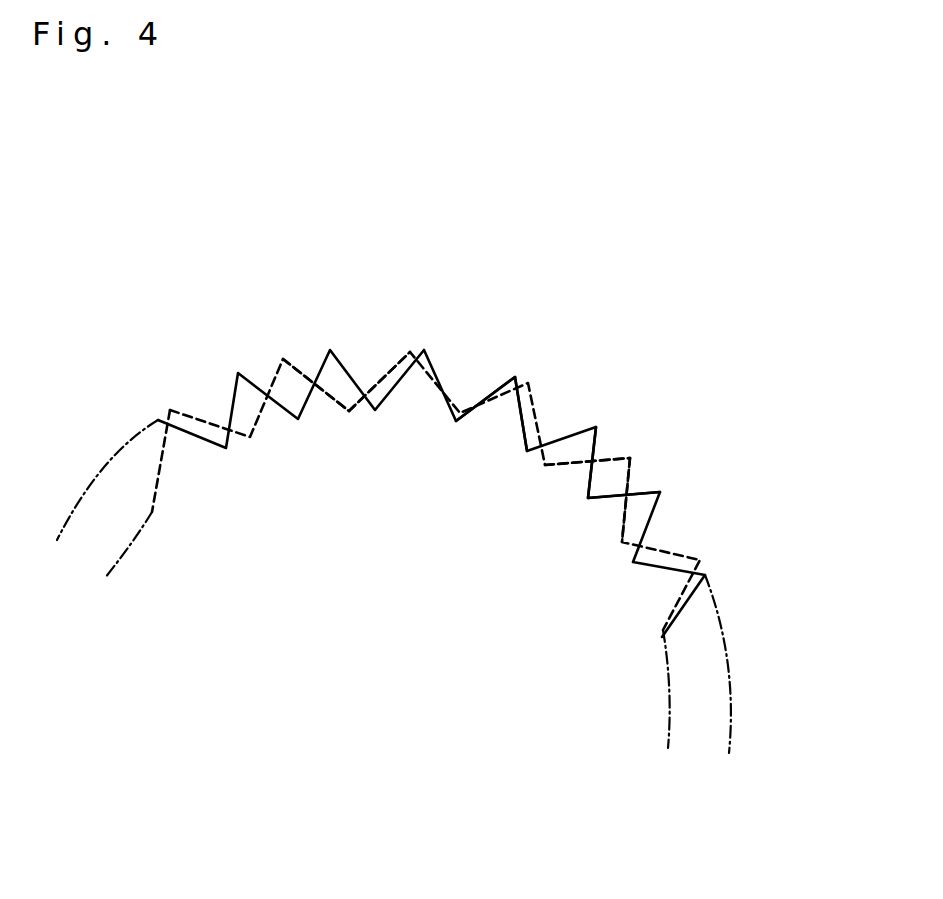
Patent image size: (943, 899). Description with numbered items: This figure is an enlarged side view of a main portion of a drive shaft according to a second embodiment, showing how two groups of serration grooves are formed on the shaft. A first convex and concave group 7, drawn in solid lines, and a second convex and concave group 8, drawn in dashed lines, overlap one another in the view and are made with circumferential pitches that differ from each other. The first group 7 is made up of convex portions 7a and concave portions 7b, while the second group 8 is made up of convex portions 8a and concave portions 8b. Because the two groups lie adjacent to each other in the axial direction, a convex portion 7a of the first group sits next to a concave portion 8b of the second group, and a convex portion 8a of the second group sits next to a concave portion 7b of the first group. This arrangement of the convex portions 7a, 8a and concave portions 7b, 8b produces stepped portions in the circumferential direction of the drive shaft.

The first convex and concave group 7 is at (573, 445).
The convex portion 7a is at (515, 377).
The concave portion 7b is at (540, 432).
The second convex and concave group 8 is at (383, 380).
The convex portion 8a is at (410, 352).
The concave portion 8b is at (349, 411).